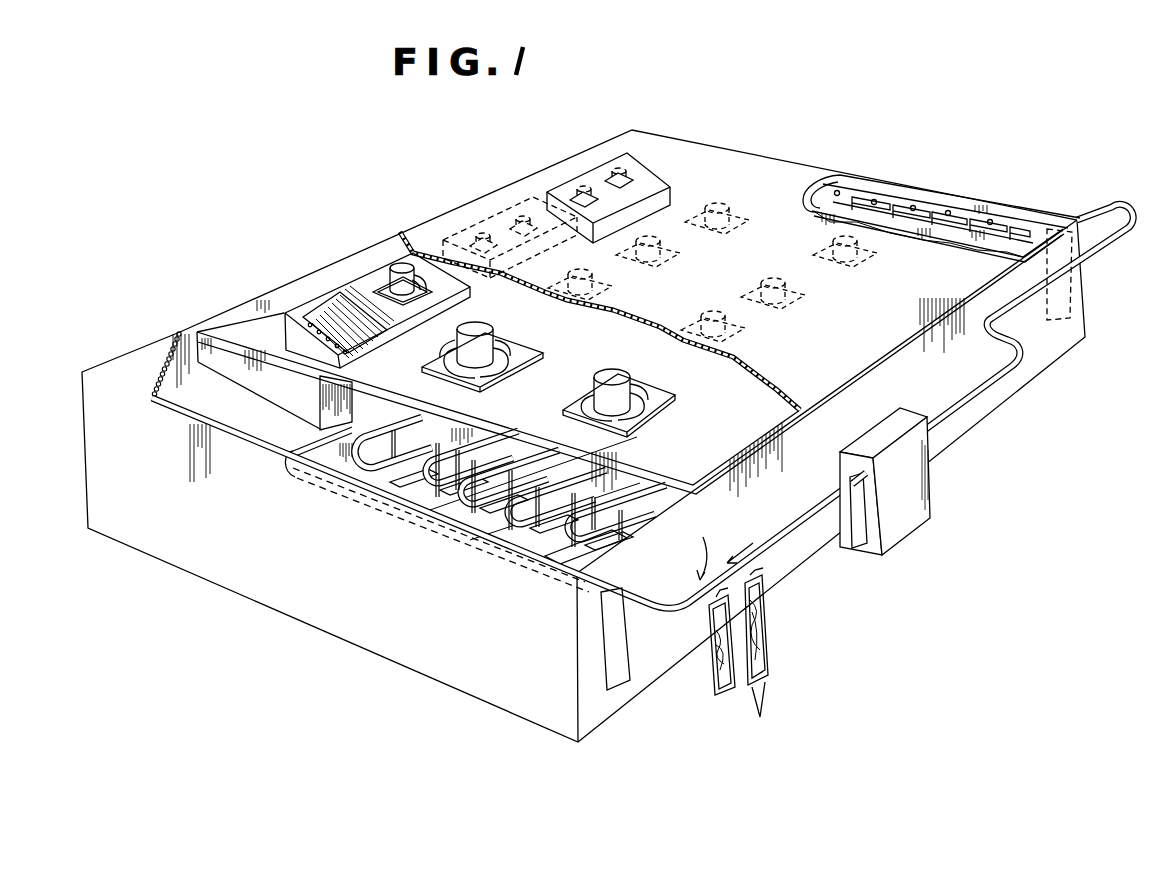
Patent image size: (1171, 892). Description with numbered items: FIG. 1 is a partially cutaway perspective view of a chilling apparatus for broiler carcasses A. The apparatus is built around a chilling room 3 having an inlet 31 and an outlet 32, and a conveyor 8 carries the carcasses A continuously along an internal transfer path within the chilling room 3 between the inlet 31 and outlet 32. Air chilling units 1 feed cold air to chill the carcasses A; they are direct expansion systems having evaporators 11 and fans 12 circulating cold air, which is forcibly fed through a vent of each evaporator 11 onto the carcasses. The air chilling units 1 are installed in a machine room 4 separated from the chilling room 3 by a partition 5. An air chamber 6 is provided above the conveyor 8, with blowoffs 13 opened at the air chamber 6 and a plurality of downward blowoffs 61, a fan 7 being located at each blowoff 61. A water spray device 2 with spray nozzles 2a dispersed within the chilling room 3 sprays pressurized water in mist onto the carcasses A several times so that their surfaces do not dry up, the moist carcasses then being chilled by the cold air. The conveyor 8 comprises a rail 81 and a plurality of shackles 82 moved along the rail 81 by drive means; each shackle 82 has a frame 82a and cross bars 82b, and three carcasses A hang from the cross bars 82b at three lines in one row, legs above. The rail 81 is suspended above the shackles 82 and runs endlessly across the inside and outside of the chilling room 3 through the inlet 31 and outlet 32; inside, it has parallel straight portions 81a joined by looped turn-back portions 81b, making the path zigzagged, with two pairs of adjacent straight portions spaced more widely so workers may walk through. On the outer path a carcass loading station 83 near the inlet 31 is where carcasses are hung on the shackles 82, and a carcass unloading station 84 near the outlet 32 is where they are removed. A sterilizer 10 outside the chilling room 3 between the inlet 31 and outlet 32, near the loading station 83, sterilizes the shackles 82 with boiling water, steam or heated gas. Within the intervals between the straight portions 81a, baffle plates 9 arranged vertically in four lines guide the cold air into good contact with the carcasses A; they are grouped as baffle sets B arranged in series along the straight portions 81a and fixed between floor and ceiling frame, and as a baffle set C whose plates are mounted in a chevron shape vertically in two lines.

The air chilling units 1 is at (578, 124).
The water spray device 2 is at (910, 195).
The spray nozzles 2a is at (877, 198).
The chilling room 3 is at (530, 540).
The machine room 4 is at (225, 380).
The partition 5 is at (293, 442).
The air chamber 6 is at (758, 398).
The downward blowoffs 61 is at (670, 410).
The fan 7 is at (609, 370).
The conveyor 8 is at (327, 475).
The rail 81 is at (823, 510).
The straight portions 81a is at (507, 465).
The turn-back portions 81b is at (392, 480).
The shackles 82 is at (739, 667).
The frame 82a is at (713, 643).
The cross bars 82b is at (727, 690).
The carcass loading station 83 is at (725, 547).
The carcass unloading station 84 is at (1093, 268).
The baffle plates 9 is at (457, 508).
The sterilizer 10 is at (897, 518).
The evaporators 11 is at (317, 307).
The fans 12 is at (402, 263).
The blowoffs 13 is at (380, 280).
The inlet 31 is at (620, 675).
The outlet 32 is at (1070, 293).
The broiler carcasses A is at (757, 650).
The baffle sets B is at (497, 528).
The baffle set C is at (527, 538).